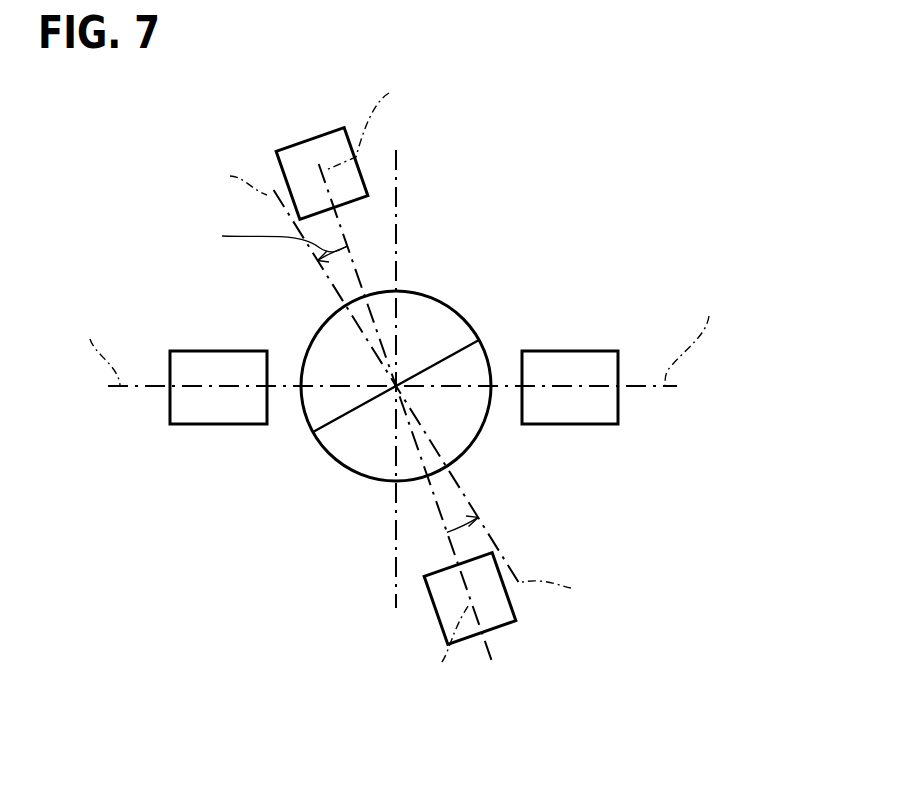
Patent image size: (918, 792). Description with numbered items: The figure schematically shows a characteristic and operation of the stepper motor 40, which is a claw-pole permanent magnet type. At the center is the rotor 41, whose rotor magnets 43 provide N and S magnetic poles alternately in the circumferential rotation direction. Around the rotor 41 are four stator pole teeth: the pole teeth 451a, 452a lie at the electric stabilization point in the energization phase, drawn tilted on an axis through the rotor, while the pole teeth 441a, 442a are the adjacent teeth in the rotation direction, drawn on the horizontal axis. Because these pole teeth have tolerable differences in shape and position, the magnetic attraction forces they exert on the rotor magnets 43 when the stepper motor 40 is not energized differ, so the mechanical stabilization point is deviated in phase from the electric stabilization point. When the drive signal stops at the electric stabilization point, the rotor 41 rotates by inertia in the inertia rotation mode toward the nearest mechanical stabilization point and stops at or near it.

The stepper motor 40 is at (444, 201).
The rotor 41 is at (427, 361).
The rotor magnets 43 is at (396, 391).
The pole tooth 441a is at (190, 357).
The pole tooth 442a is at (582, 357).
The pole tooth 451a is at (301, 145).
The pole tooth 452a is at (497, 613).